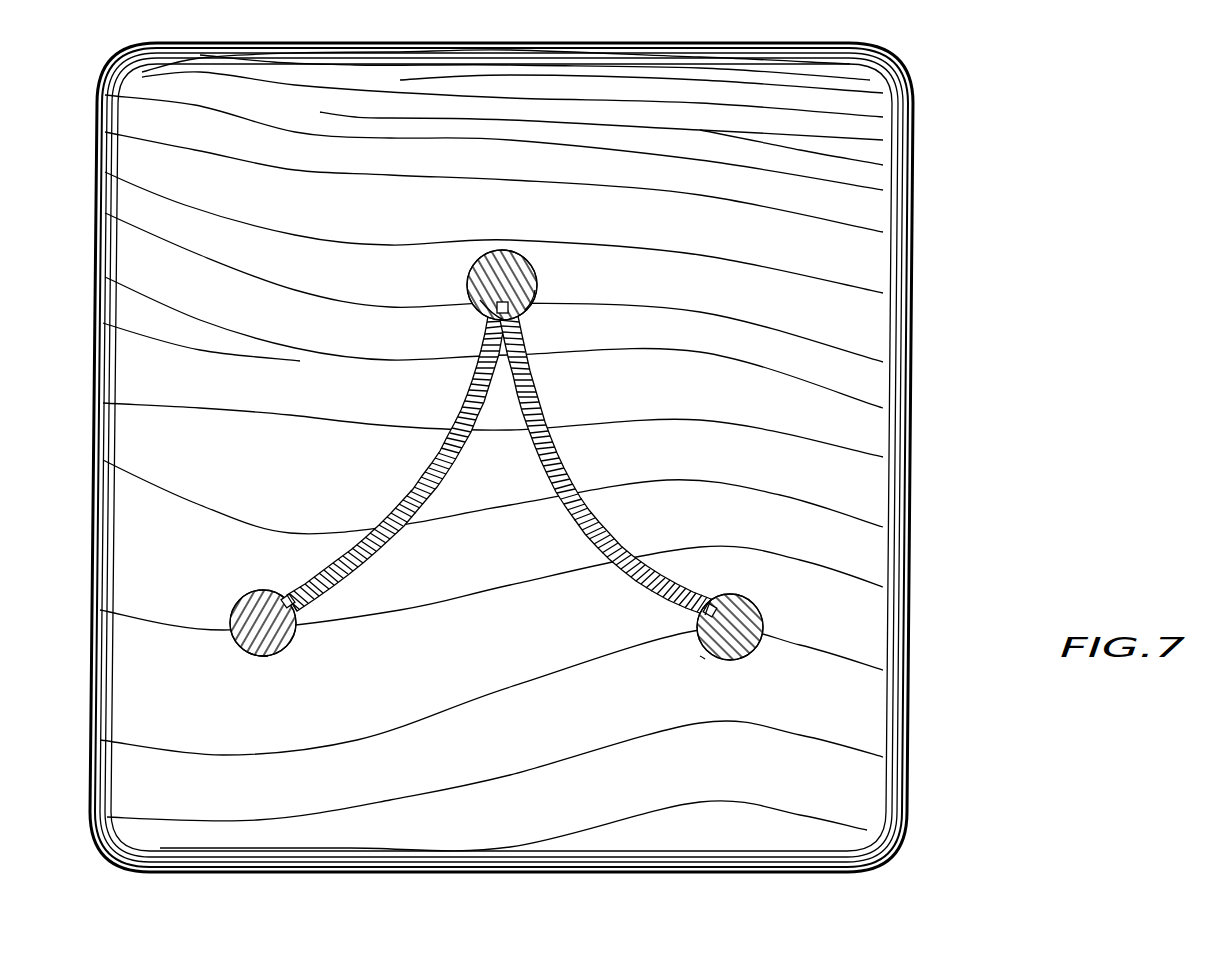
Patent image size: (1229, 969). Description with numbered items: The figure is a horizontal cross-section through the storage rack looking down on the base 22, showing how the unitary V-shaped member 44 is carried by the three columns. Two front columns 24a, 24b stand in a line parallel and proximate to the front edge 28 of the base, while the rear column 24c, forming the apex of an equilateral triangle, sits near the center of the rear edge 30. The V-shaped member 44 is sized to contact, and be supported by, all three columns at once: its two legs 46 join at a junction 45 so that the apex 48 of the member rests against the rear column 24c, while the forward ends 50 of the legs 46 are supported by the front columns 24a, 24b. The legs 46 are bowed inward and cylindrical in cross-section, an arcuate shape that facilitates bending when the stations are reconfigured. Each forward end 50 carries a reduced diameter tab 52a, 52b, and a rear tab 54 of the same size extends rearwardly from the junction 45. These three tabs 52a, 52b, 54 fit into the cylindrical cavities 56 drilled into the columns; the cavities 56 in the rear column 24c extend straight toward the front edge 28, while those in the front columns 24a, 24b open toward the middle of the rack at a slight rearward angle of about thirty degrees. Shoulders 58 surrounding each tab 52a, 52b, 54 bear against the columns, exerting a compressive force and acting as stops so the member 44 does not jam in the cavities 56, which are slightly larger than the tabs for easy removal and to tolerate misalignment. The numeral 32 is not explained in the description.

The rear edge of the base 30 is at (793, 40).
The base 22 is at (840, 320).
The front edge of the base 28 is at (752, 876).
The front column 24a is at (240, 605).
The front column 24b is at (758, 608).
The rear column 24c is at (537, 278).
The recess around peg hole 32 is at (748, 655).
The V-shaped member 44 is at (474, 465).
The junction 45 is at (520, 337).
The legs 46 is at (600, 517).
The apex 48 is at (480, 323).
The forward ends 50 is at (314, 618).
The tab 52a is at (257, 590).
The tab 52b is at (742, 598).
The rear tab 54 is at (468, 296).
The cavities 56 is at (540, 287).
The shoulders 58 is at (510, 318).